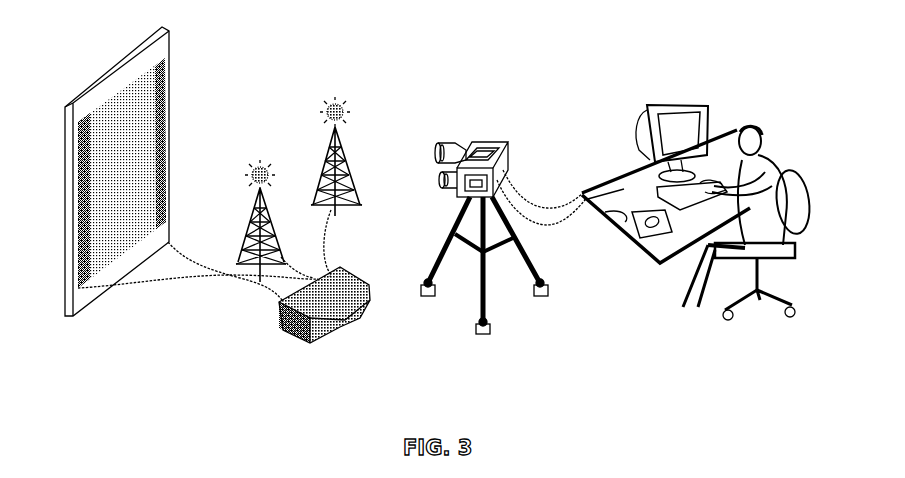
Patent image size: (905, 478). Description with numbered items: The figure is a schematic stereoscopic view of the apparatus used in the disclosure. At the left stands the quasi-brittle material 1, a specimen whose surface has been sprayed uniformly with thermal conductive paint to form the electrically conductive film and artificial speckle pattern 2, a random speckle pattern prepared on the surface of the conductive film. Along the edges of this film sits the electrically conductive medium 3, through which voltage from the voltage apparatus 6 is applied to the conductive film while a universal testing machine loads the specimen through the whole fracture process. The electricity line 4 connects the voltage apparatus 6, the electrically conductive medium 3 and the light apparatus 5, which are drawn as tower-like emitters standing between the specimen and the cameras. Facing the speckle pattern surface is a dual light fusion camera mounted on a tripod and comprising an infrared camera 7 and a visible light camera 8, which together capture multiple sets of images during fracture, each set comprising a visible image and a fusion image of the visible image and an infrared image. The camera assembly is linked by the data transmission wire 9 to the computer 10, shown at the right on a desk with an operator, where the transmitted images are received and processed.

The quasi-brittle material 1 is at (157, 57).
The electrically conductive film and artificial speckle pattern 2 is at (134, 136).
The electrically conductive medium 3 is at (90, 175).
The electricity line 4 is at (174, 248).
The light apparatus 5 is at (322, 131).
The voltage apparatus 6 is at (368, 317).
The infrared camera 7 is at (440, 183).
The visible light camera 8 is at (447, 141).
The data transmission wire 9 is at (544, 226).
The computer 10 is at (713, 110).